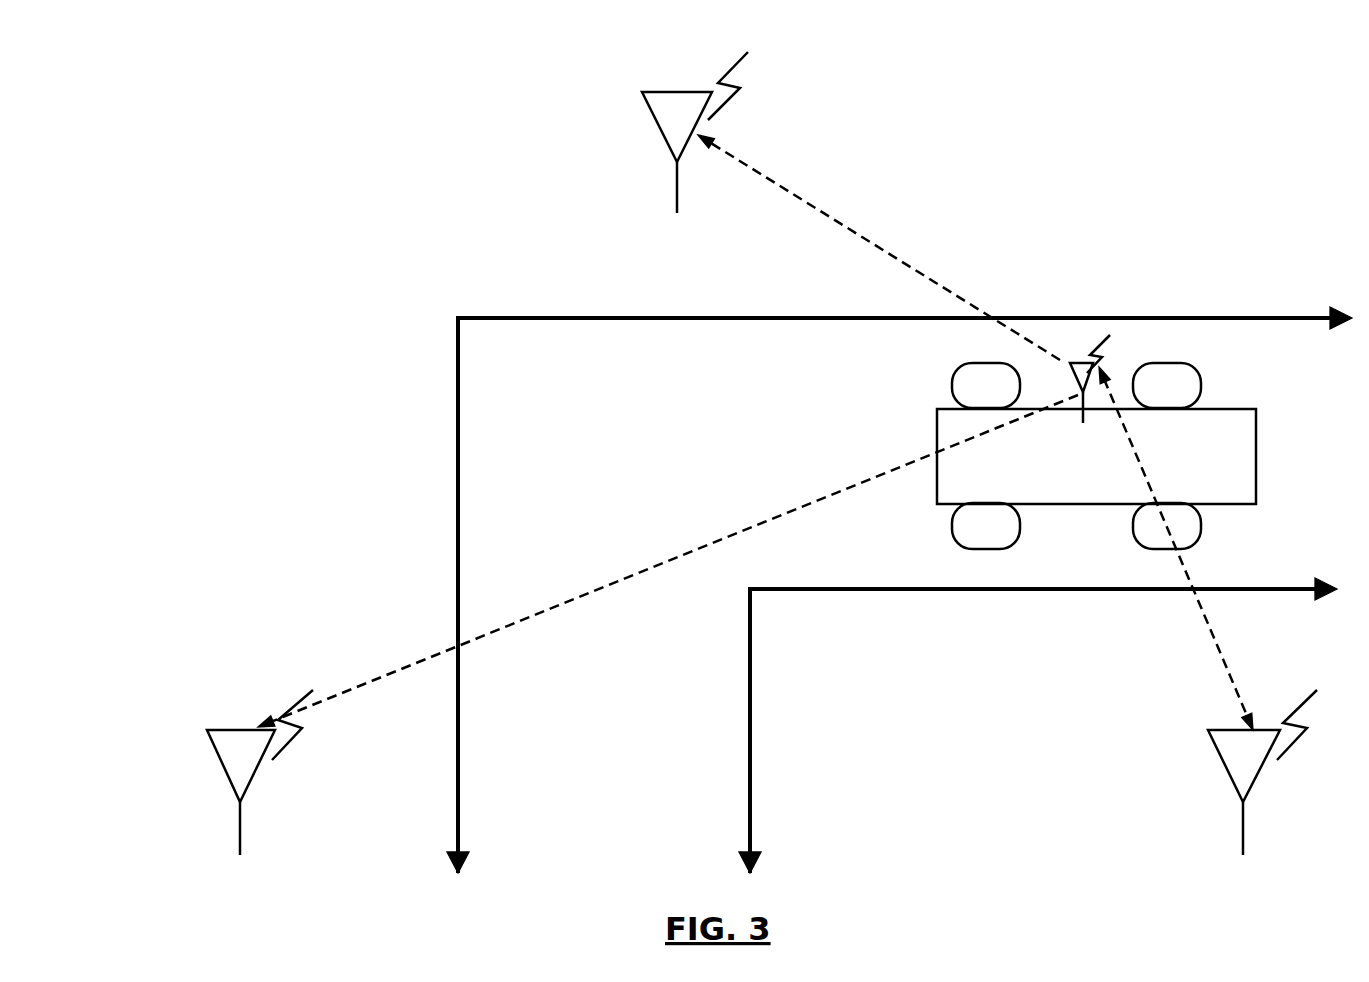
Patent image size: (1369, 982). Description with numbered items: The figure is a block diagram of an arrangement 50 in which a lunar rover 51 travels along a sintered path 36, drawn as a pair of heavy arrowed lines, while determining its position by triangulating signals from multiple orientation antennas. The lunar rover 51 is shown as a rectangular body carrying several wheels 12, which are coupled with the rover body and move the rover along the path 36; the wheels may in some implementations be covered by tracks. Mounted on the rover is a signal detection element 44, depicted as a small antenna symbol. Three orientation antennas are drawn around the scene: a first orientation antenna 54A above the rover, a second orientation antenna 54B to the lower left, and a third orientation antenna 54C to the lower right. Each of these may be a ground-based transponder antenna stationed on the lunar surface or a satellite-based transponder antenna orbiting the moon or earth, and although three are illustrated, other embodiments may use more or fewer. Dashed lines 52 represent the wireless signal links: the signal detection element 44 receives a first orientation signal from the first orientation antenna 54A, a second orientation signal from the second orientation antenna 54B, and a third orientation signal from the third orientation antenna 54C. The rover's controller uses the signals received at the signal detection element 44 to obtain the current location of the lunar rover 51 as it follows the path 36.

The vehicle location system 50 is at (275, 202).
The sintered path 36 is at (623, 317).
The wheels 12 is at (1125, 439).
The lunar rover 51 is at (1256, 455).
The signal detection element 44 is at (1079, 362).
The wireless communication links 52 is at (922, 263).
The first orientation antenna 54A is at (665, 92).
The second orientation antenna 54B is at (227, 730).
The third orientation antenna 54C is at (1228, 730).